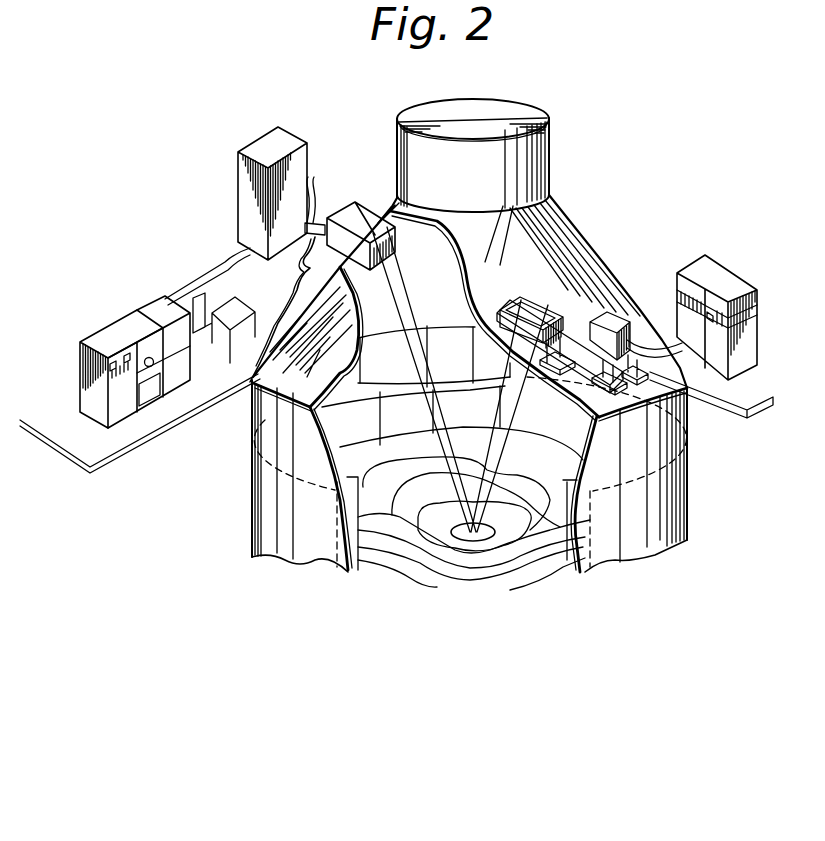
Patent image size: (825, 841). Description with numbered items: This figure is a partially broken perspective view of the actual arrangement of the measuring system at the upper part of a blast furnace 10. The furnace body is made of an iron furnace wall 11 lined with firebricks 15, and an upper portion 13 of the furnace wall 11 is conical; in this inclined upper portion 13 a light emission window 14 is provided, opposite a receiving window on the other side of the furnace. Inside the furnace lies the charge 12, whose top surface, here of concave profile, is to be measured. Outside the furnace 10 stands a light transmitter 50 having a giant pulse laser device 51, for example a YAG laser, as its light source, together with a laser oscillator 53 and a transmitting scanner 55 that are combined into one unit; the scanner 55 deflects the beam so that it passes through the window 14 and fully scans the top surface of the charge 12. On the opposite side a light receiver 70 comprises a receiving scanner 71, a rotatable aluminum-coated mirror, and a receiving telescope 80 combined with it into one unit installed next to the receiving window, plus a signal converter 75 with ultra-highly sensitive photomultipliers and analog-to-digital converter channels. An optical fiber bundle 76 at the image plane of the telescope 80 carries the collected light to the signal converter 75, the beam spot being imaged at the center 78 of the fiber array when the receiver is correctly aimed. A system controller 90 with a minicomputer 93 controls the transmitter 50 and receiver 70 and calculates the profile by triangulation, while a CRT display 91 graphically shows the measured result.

The blast furnace 10 is at (451, 363).
The furnace wall 11 is at (693, 490).
The charge 12 is at (510, 537).
The upper portion of the furnace wall 13 is at (583, 259).
The light emission window 14 is at (518, 302).
The firebricks 15 is at (620, 497).
The light transmitter 50 is at (635, 334).
The giant pulse laser device 51 is at (705, 275).
The laser oscillator 53 is at (598, 322).
The transmitting scanner 55 is at (523, 297).
The light receiver 70 is at (280, 285).
The receiving scanner 71 is at (345, 205).
The signal converter 75 is at (292, 140).
The optical fiber bundle 76 is at (308, 236).
The center of optical fiber array 78 is at (227, 262).
The receiving telescope 80 is at (316, 225).
The system controller 90 is at (140, 393).
The CRT display 91 is at (207, 358).
The minicomputer 93 is at (128, 326).